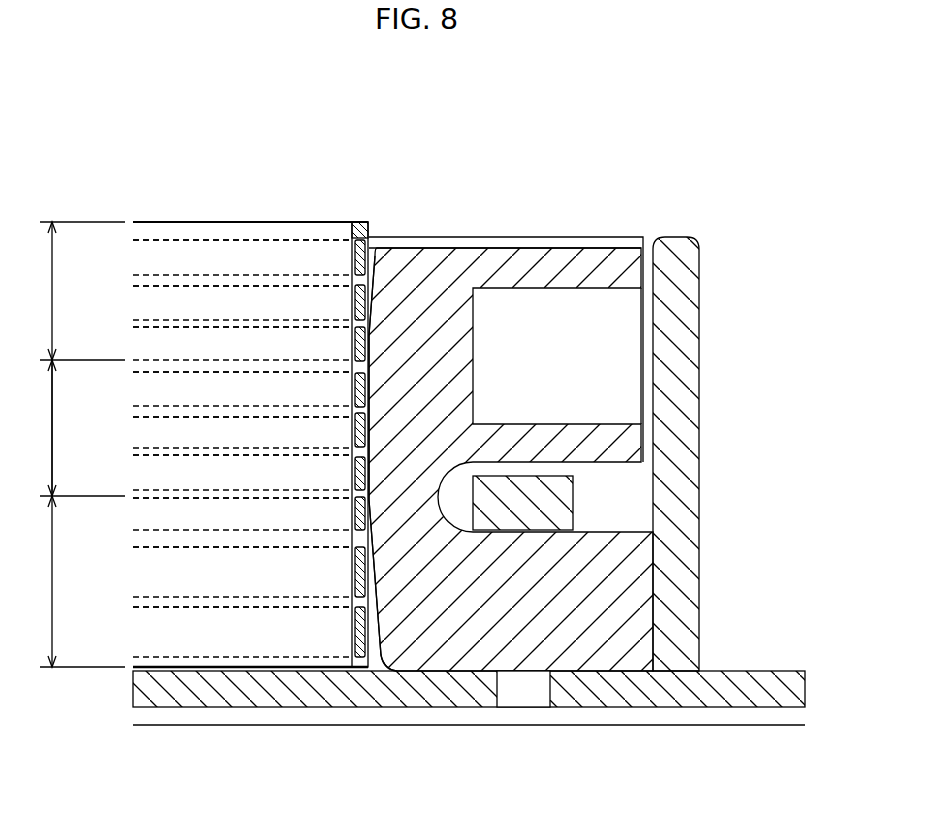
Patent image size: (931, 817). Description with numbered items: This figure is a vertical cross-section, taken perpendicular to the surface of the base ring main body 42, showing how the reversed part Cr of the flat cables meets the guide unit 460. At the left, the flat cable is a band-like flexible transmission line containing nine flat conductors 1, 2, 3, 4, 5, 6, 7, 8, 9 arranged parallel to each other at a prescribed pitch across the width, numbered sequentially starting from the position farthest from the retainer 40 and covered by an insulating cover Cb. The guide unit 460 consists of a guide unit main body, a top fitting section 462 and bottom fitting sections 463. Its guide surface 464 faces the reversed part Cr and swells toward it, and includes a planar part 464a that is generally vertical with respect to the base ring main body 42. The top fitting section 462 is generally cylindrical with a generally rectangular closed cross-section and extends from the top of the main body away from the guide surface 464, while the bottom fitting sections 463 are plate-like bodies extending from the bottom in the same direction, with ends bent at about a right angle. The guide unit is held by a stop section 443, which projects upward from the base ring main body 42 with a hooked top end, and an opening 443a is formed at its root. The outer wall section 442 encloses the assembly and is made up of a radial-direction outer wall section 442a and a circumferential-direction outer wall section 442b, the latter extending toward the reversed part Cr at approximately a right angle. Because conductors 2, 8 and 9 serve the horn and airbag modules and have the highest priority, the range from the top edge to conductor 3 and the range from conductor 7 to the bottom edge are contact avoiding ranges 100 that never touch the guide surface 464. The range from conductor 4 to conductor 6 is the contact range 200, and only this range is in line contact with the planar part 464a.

The flat conductor 1 is at (153, 257).
The flat conductor 2 is at (153, 304).
The flat conductor 3 is at (153, 344).
The flat conductor 4 is at (153, 389).
The flat conductor 5 is at (153, 430).
The flat conductor 6 is at (153, 474).
The flat conductor 7 is at (153, 512).
The flat conductor 8 is at (153, 564).
The flat conductor 9 is at (153, 622).
The contact avoiding range 100 is at (68, 444).
The contact range 200 is at (32, 428).
The retainer 40 is at (718, 728).
The base ring main body 42 is at (469, 698).
The outer wall section 442 is at (545, 402).
The radial-direction outer wall section 442a is at (688, 265).
The circumferential-direction outer wall section 442b is at (506, 211).
The stop section 443 is at (563, 498).
The opening 443a is at (527, 693).
The guide unit 460 is at (570, 462).
The top fitting section 462 is at (503, 270).
The bottom fitting section 463 is at (612, 578).
The guide surface 464 is at (375, 600).
The planar part 464a is at (368, 448).
The insulating cover Cb is at (363, 232).
The reversed part Cr is at (190, 228).